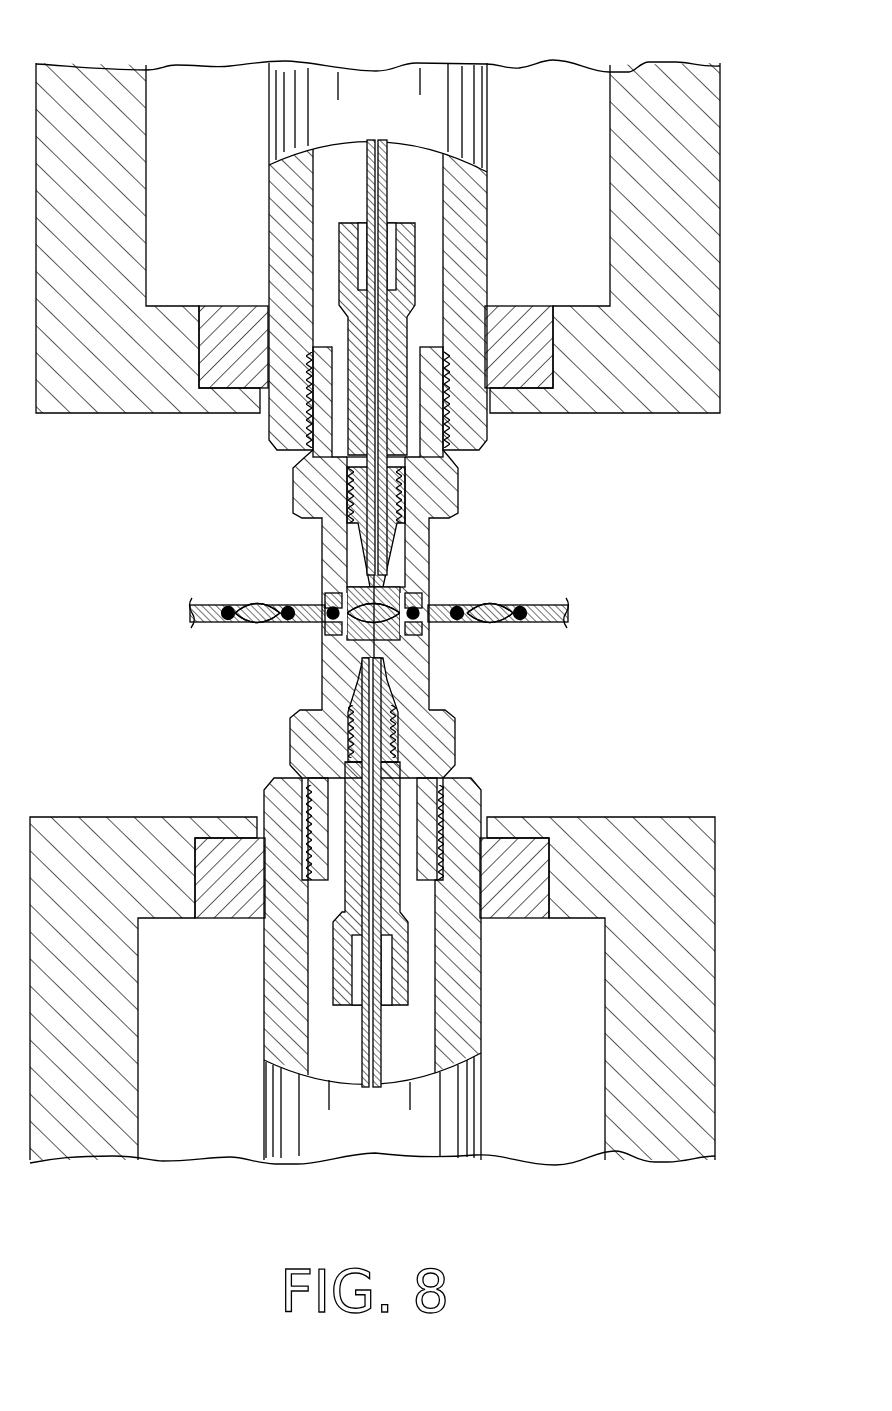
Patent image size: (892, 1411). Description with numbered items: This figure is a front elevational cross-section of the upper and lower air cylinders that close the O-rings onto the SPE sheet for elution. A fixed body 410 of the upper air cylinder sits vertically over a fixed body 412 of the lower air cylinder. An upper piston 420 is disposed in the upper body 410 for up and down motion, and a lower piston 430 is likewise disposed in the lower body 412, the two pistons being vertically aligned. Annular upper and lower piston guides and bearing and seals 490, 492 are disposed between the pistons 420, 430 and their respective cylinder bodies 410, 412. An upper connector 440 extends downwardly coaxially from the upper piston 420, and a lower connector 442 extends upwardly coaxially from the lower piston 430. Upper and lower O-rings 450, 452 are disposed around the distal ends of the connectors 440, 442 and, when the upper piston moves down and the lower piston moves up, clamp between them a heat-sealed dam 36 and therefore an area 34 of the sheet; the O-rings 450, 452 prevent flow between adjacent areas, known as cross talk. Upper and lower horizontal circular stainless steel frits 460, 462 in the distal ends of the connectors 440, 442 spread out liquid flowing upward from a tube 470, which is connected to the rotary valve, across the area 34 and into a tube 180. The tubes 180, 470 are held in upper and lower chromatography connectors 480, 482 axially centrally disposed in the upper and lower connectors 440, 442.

The area 34 is at (258, 611).
The heat-sealed dam 36 is at (288, 622).
The tube 180 is at (387, 160).
The fixed body of upper air cylinder 410 is at (688, 246).
The fixed body of lower air cylinder 412 is at (680, 988).
The upper piston 420 is at (290, 212).
The lower piston 430 is at (460, 987).
The upper connector 440 is at (310, 487).
The lower connector 442 is at (310, 745).
The upper O-ring 450 is at (333, 592).
The lower O-ring 452 is at (330, 640).
The upper frit 460 is at (357, 592).
The lower frit 462 is at (385, 648).
The tube 470 is at (372, 1067).
The upper chromatography connector 480 is at (408, 244).
The lower chromatography connector 482 is at (395, 823).
The upper piston guide and bearing and seal 490 is at (522, 370).
The lower piston guide and bearing and seal 492 is at (231, 863).